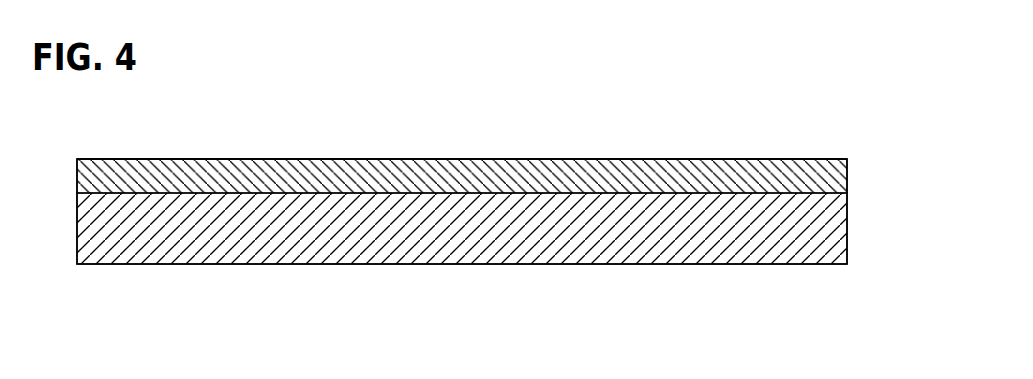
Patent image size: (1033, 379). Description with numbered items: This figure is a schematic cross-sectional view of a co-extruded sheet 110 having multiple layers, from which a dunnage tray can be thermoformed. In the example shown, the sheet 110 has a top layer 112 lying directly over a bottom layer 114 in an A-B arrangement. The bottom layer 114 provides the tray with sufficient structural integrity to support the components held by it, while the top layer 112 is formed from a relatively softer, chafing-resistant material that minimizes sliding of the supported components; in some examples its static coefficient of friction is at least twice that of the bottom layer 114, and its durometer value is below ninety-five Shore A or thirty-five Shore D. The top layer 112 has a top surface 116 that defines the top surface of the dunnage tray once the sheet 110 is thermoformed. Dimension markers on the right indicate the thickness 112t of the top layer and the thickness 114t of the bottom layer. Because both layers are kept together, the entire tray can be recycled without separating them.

The sheet 110 is at (746, 134).
The top layer 112 is at (482, 172).
The bottom layer 114 is at (478, 265).
The top surface 116 is at (393, 160).
The thickness of first layer 112t is at (855, 159).
The thickness of second layer 114t is at (855, 264).